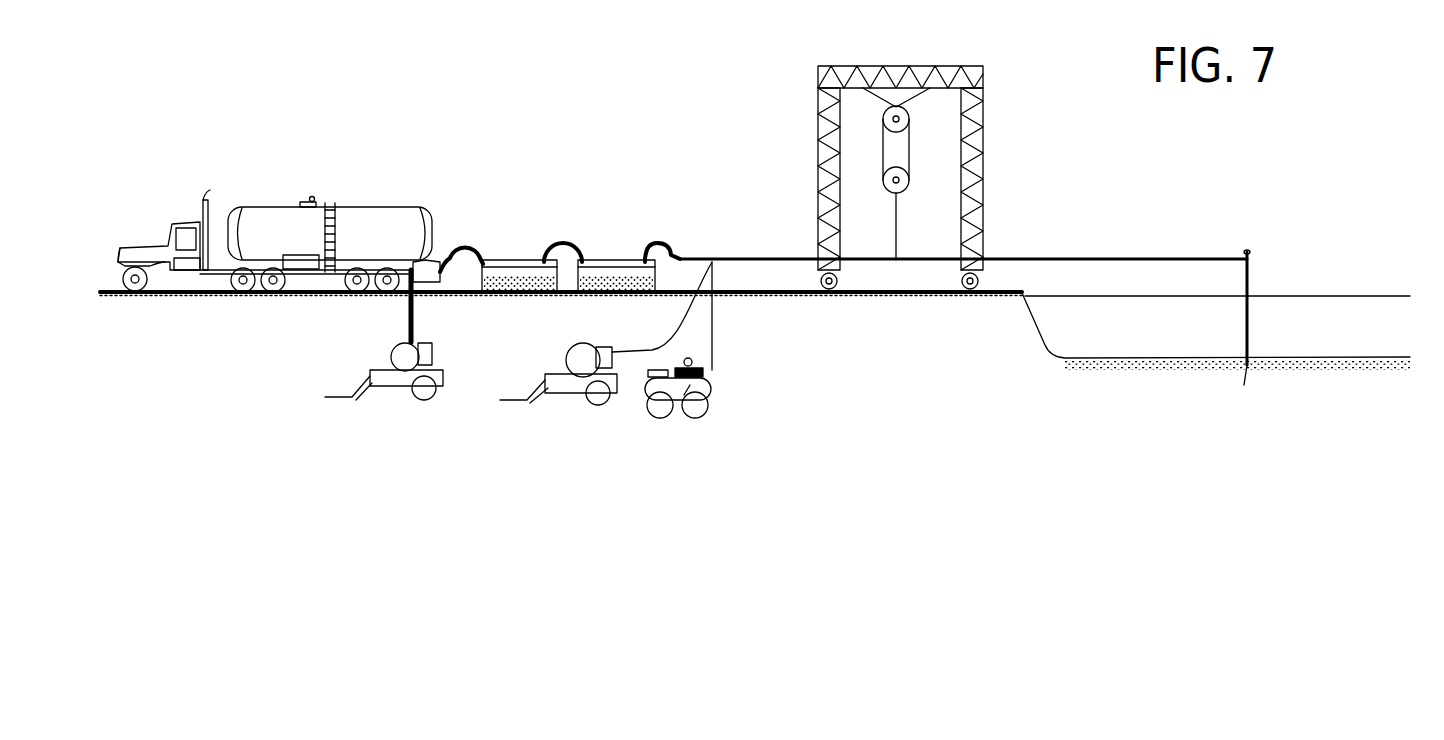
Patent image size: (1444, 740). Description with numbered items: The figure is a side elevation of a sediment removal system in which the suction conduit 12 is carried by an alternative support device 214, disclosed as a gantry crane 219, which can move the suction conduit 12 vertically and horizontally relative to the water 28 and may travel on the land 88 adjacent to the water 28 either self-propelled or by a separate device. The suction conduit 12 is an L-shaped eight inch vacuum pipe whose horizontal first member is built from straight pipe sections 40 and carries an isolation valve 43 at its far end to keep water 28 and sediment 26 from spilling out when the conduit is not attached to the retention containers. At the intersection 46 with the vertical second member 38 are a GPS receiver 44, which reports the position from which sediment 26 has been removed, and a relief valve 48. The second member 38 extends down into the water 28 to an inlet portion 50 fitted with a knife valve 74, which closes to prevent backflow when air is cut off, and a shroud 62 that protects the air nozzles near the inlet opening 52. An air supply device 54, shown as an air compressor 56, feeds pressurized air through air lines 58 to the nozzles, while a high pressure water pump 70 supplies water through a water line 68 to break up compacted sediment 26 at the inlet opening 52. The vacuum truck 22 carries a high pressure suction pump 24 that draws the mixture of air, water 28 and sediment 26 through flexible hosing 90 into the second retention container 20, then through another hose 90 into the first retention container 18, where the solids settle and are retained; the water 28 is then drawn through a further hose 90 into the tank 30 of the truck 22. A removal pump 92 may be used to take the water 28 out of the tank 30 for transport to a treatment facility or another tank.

The vacuum truck 22 is at (277, 205).
The tank 30 is at (378, 222).
The high pressure suction pump 24 is at (438, 262).
The flexible hosing 90 is at (410, 312).
The first sediment retention container 18 is at (487, 297).
The second sediment retention container 20 is at (570, 297).
The sediment 26 is at (1166, 368).
The isolation valve 43 is at (679, 258).
The straight pipe sections 40 is at (948, 262).
The suction conduit 12 is at (943, 247).
The support device 214 is at (815, 86).
The gantry crane 219 is at (985, 152).
The second member 38 is at (1254, 281).
The GPS receiver 44 is at (1250, 254).
The intersection 46 is at (1252, 258).
The relief valve 48 is at (1252, 262).
The water 28 is at (1345, 315).
The land 88 is at (1000, 334).
The inlet portion 50 is at (1247, 360).
The shroud 62 is at (1245, 363).
The knife valve 74 is at (1250, 348).
The inlet opening 52 is at (1244, 385).
The removal pump 92 is at (388, 382).
The high pressure water pump 70 is at (555, 387).
The water line 68 is at (648, 350).
The air supply device 54 is at (724, 398).
The air compressor 56 is at (706, 378).
The air lines 58 is at (713, 317).